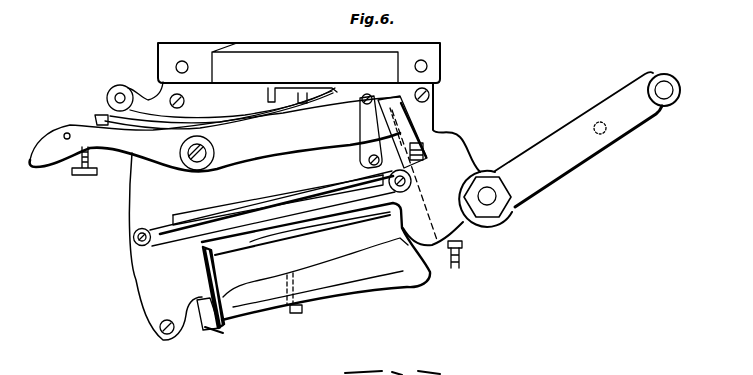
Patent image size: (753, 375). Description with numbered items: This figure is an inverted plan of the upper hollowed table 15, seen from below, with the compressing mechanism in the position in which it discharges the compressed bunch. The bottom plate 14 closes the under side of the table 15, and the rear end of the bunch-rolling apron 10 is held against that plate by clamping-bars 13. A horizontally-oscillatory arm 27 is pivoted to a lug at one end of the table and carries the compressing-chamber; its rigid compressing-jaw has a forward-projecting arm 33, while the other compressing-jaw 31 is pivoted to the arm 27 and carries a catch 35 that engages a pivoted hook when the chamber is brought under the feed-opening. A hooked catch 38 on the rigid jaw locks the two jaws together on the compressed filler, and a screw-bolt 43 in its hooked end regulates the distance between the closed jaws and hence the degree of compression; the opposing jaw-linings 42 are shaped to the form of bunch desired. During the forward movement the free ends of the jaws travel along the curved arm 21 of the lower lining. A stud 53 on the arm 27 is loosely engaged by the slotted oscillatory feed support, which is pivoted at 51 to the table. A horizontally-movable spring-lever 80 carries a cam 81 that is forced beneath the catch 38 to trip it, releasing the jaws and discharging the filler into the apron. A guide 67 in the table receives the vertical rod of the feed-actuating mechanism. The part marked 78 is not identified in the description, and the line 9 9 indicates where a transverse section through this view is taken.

The section line 9 9 is at (450, 292).
The bunch-rolling apron 10 is at (247, 202).
The clamping-bars 13 is at (166, 231).
The bottom plate 14 is at (276, 200).
The upper hollowed table 15 is at (299, 63).
The forward-projecting curved arm 21 is at (208, 320).
The horizontally-oscillatory arm 27 is at (587, 139).
The compressing-jaw 31 is at (316, 261).
The forward-projecting arm 33 is at (224, 294).
The catch 35 is at (198, 313).
The hooked catch 38 is at (464, 242).
The jaw-linings 42 is at (311, 262).
The screw-bolt 43 is at (468, 259).
The pivot 51 is at (490, 203).
The stud 53 is at (596, 122).
The guide 67 is at (209, 105).
The adjusting bolt 78 is at (92, 179).
The spring-lever 80 is at (215, 134).
The cam 81 is at (407, 127).